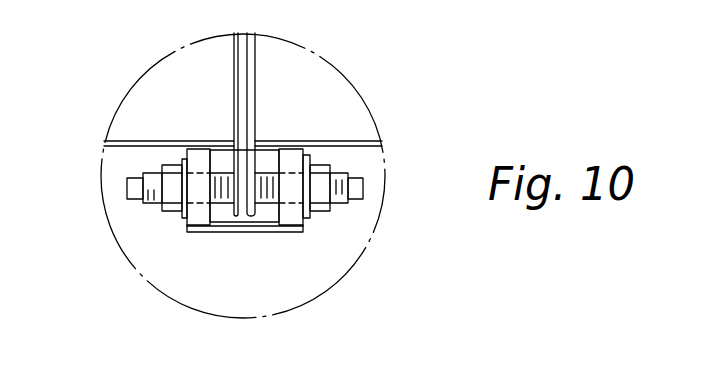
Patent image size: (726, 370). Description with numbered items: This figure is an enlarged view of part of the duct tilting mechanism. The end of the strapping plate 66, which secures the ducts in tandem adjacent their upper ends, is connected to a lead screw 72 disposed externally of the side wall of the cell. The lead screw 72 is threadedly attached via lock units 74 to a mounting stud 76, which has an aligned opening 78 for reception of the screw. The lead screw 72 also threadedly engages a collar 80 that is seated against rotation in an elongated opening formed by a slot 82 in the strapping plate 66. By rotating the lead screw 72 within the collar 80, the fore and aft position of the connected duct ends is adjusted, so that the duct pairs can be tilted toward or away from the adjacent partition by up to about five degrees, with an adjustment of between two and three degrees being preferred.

The strapping plate 66 is at (255, 95).
The lead screw 72 is at (337, 212).
The lock unit 74 is at (320, 212).
The mounting stud 76 is at (195, 215).
The aligned opening 78 is at (196, 172).
The collar 80 is at (252, 172).
The slot 82 is at (234, 172).